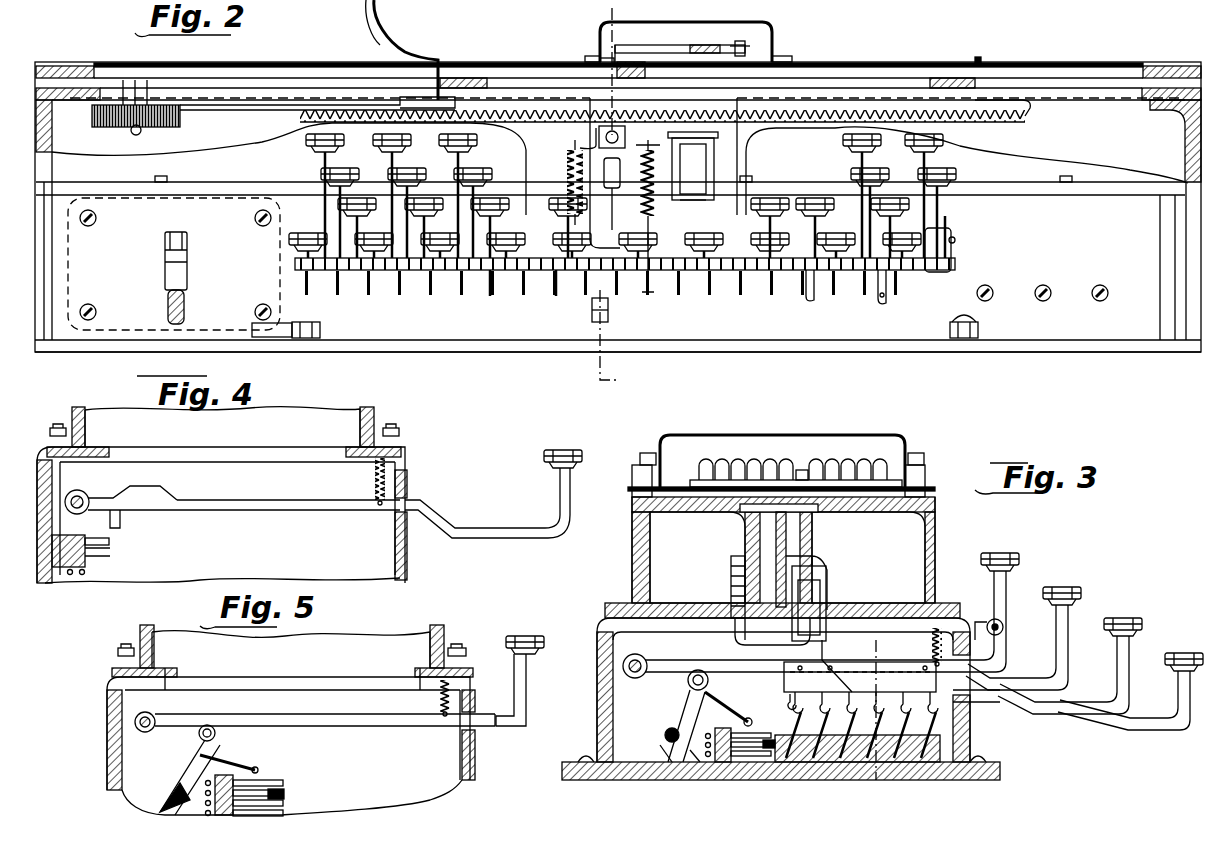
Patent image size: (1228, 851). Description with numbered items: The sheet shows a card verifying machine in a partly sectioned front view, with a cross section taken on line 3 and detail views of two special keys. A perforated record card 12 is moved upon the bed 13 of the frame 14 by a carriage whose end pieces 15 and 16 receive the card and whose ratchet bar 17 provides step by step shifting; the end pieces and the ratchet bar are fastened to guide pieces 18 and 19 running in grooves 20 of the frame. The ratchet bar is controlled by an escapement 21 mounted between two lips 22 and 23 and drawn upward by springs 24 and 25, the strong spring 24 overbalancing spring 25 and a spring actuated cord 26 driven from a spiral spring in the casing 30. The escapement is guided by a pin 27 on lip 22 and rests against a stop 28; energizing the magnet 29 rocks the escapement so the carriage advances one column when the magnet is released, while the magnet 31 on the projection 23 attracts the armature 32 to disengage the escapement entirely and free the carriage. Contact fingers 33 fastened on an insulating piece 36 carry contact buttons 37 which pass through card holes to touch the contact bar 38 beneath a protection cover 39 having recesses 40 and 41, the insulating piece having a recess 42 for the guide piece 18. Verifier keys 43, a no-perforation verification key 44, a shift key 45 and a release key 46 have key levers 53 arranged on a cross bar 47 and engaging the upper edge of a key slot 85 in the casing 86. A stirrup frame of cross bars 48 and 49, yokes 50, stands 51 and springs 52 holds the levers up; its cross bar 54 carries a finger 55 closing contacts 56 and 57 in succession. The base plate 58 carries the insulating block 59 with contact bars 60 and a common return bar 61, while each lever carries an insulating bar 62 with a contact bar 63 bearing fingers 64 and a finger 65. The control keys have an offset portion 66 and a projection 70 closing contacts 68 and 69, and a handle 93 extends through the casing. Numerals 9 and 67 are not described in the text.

In FIG. 2, the section line 3— 3 is at (614, 192).
In FIG. 3, the section line 9- 9 is at (889, 708).
In FIG. 2, the perforated record card 12 is at (865, 64).
In FIG. 3, the perforated record card 12 is at (910, 468).
In FIG. 2, the bed 13 is at (1055, 66).
In FIG. 2, the frame 14 is at (1185, 115).
In FIG. 2, the end piece 15 is at (412, 22).
In FIG. 2, the end piece 16 is at (979, 58).
In FIG. 2, the ratchet bar 17 is at (1030, 112).
In FIG. 2, the guide piece 18 is at (485, 80).
In FIG. 2, the guide piece 19 is at (950, 78).
In FIG. 2, the groove 20 is at (1160, 80).
In FIG. 2, the escapement 21 is at (582, 137).
In FIG. 2, the lip 22 is at (740, 122).
In FIG. 3, the lip 22 is at (745, 530).
In FIG. 3, the lip 23 is at (815, 530).
In FIG. 2, the spring 24 is at (568, 170).
In FIG. 2, the spring 25 is at (715, 158).
In FIG. 2, the spring actuated cord 26 is at (238, 112).
In FIG. 2, the pin 27 is at (602, 182).
In FIG. 3, the pin 27 is at (776, 594).
In FIG. 2, the stop 28 is at (556, 276).
In FIG. 3, the stop 28 is at (760, 632).
In FIG. 2, the magnet 29 is at (706, 190).
In FIG. 3, the magnet 29 is at (731, 578).
In FIG. 2, the casing 30 is at (106, 127).
In FIG. 2, the magnet 31 is at (645, 280).
In FIG. 3, the magnet 31 is at (826, 605).
In FIG. 2, the armature 32 is at (665, 140).
In FIG. 3, the armature 32 is at (827, 568).
In FIG. 3, the contact fingers 33 is at (847, 462).
In FIG. 2, the insulating piece 36 is at (692, 45).
In FIG. 3, the insulating piece 36 is at (635, 480).
In FIG. 2, the contact buttons 37 is at (628, 58).
In FIG. 3, the contact buttons 37 is at (770, 458).
In FIG. 2, the contact bar 38 is at (640, 78).
In FIG. 2, the protection cover 39 is at (600, 30).
In FIG. 3, the protection cover 39 is at (890, 438).
In FIG. 2, the recess 40 is at (593, 57).
In FIG. 2, the recess 41 is at (778, 58).
In FIG. 2, the recess 42 is at (740, 41).
In FIG. 3, the recess 42 is at (802, 470).
In FIG. 2, the verifier keys 43 is at (862, 168).
In FIG. 3, the verifier keys 43 is at (1125, 620).
In FIG. 2, the no-perforation verification key 44 is at (956, 175).
In FIG. 5, the no-perforation verification key 44 is at (520, 668).
In FIG. 2, the shift key 45 is at (817, 198).
In FIG. 4, the shift key 45 is at (552, 452).
In FIG. 2, the release key 46 is at (912, 205).
In FIG. 2, the cross bar 47 is at (956, 239).
In FIG. 3, the cross bar 47 is at (624, 660).
In FIG. 5, the cross bar 48 is at (216, 735).
In FIG. 3, the cross bar 48 is at (688, 685).
In FIG. 3, the cross bar 49 is at (665, 738).
In FIG. 5, the yoke 50 is at (195, 768).
In FIG. 3, the yoke 50 is at (685, 712).
In FIG. 3, the stand 51 is at (665, 758).
In FIG. 3, the spring 52 is at (695, 760).
In FIG. 2, the key lever 53 is at (750, 285).
In FIG. 4, the key lever 53 is at (500, 542).
In FIG. 5, the key lever 53 is at (428, 726).
In FIG. 3, the key lever 53 is at (1180, 727).
In FIG. 3, the cross bar 54 is at (718, 705).
In FIG. 3, the finger 55 is at (745, 718).
In FIG. 5, the contact 56 is at (283, 784).
In FIG. 3, the contact 56 is at (742, 760).
In FIG. 5, the contact 57 is at (283, 803).
In FIG. 3, the contact 57 is at (755, 760).
In FIG. 2, the base plate 58 is at (500, 352).
In FIG. 3, the base plate 58 is at (980, 780).
In FIG. 3, the insulating block 59 is at (905, 762).
In FIG. 3, the contact bars 60 is at (900, 760).
In FIG. 3, the contact bar 61 is at (820, 762).
In FIG. 2, the insulating bar 62 is at (490, 272).
In FIG. 3, the insulating bar 62 is at (930, 672).
In FIG. 3, the contact bar 63 is at (850, 690).
In FIG. 3, the contact fingers 64 is at (960, 712).
In FIG. 3, the contact finger 65 is at (790, 703).
In FIG. 4, the offset portion 66 is at (148, 490).
In FIG. 4, the spring 67 is at (376, 478).
In FIG. 2, the contact 68 is at (808, 287).
In FIG. 4, the contact 68 is at (112, 545).
In FIG. 2, the contact 69 is at (880, 292).
In FIG. 4, the projection 70 is at (122, 525).
In FIG. 2, the key slot 85 is at (950, 262).
In FIG. 4, the key slot 85 is at (397, 522).
In FIG. 3, the key slot 85 is at (1050, 702).
In FIG. 5, the casing 86 is at (476, 690).
In FIG. 3, the casing 86 is at (968, 636).
In FIG. 2, the handle 93 is at (190, 315).